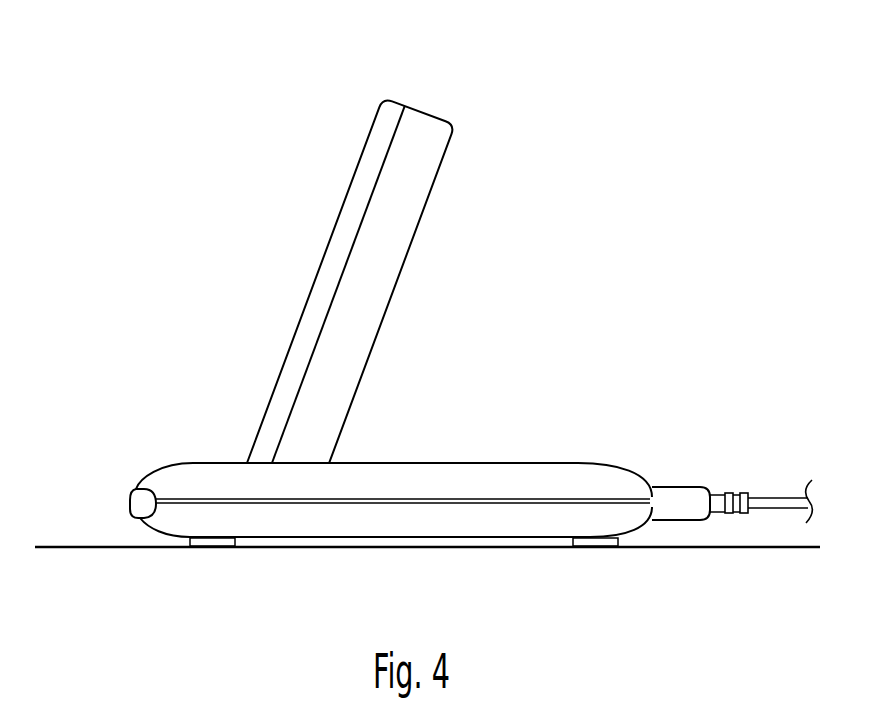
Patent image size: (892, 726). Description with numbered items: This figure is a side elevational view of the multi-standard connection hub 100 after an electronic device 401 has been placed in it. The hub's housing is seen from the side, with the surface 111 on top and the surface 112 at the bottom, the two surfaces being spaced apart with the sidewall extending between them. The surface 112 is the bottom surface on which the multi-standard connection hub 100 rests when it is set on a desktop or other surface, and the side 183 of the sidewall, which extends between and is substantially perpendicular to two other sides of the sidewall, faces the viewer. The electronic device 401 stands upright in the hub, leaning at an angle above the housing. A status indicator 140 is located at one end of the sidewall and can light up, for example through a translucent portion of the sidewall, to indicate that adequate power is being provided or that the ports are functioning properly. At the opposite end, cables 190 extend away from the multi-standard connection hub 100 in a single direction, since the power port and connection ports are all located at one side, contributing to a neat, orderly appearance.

The multi-standard connection hub 100 is at (124, 434).
The electronic device 401 is at (437, 145).
The surface 111 is at (493, 463).
The side 183 is at (440, 492).
The surface 112 is at (528, 539).
The status indicator 140 is at (130, 504).
The cables 190 is at (770, 498).